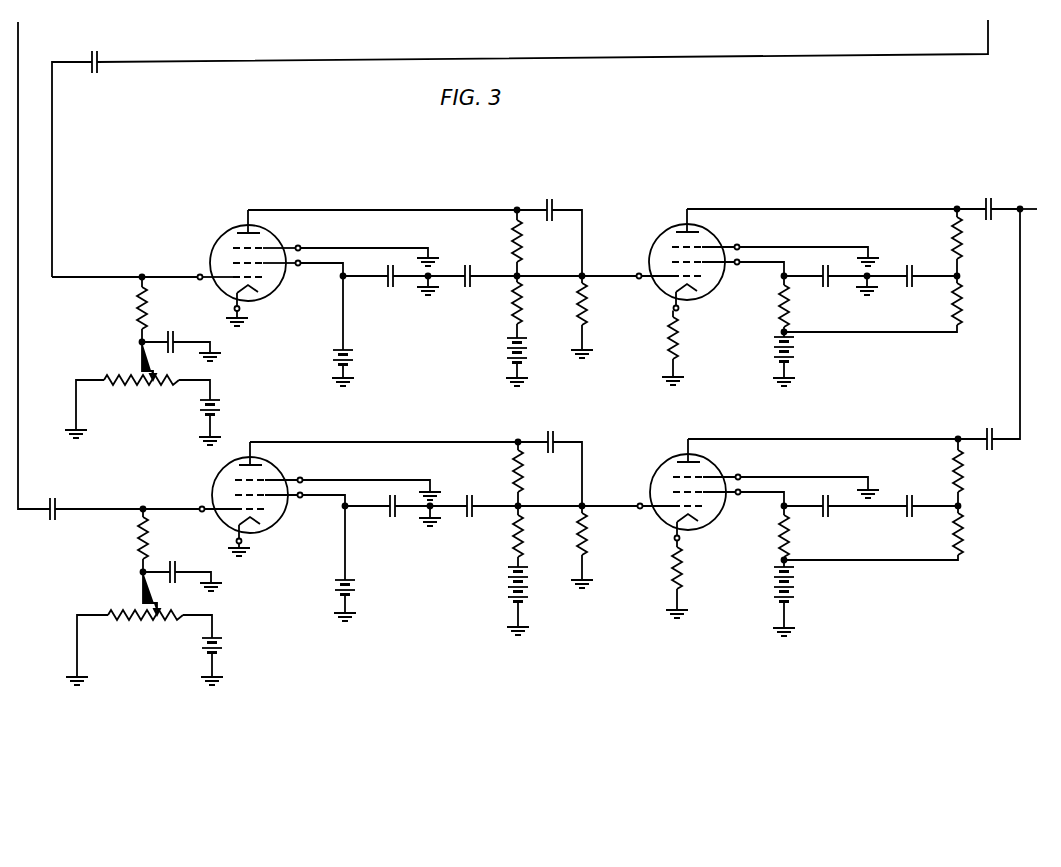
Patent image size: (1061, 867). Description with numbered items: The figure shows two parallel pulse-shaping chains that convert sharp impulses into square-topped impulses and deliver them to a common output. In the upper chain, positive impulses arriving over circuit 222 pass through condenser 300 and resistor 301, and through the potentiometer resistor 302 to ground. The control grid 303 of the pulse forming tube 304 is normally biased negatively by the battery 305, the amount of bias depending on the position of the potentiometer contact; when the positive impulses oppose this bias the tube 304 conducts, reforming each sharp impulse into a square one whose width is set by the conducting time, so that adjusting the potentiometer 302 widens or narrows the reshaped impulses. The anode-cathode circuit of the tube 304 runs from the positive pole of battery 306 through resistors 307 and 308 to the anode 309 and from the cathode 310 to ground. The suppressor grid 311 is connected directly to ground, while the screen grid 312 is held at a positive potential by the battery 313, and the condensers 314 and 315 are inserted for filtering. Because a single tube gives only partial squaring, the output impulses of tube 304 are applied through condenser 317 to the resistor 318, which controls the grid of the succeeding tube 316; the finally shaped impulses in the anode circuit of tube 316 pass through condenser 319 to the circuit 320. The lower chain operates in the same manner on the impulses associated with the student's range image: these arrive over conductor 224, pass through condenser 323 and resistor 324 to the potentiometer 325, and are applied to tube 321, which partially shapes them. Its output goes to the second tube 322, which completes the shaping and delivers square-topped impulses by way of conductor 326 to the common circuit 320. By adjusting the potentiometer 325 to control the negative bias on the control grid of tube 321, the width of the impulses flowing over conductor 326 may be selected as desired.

The circuit 222 is at (732, 56).
The conductor 224 is at (18, 340).
The condenser 300 is at (97, 50).
The resistor 301 is at (147, 314).
The potentiometer resistor 302 is at (160, 386).
The control grid 303 is at (262, 278).
The pulse forming tube 304 is at (216, 242).
The battery 305 is at (216, 410).
The battery 306 is at (510, 357).
The resistor 307 is at (522, 310).
The resistor 308 is at (522, 241).
The anode 309 is at (243, 215).
The cathode 310 is at (256, 292).
The suppressor grid 311 is at (265, 248).
The screen grid 312 is at (233, 262).
The battery 313 is at (354, 357).
The condenser 314 is at (394, 289).
The condenser 315 is at (463, 288).
The tube 316 is at (656, 241).
The condenser 317 is at (556, 185).
The resistor 318 is at (588, 305).
The condenser 319 is at (988, 194).
The circuit 320 is at (1034, 206).
The tube 321 is at (277, 472).
The tube 322 is at (659, 468).
The condenser 323 is at (54, 497).
The resistor 324 is at (148, 544).
The potentiometer 325 is at (140, 617).
The conductor 326 is at (1020, 360).